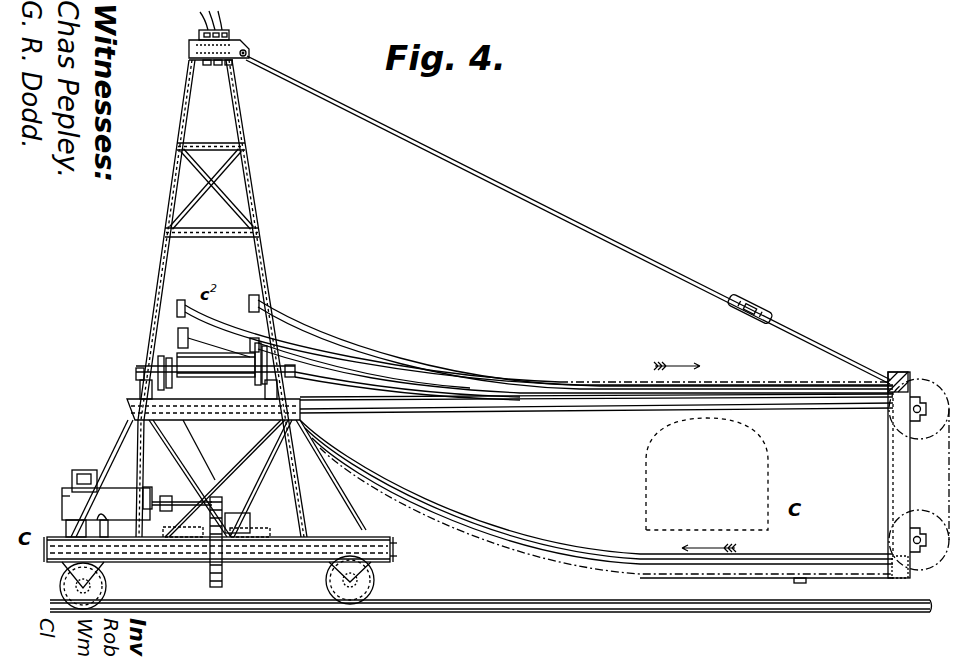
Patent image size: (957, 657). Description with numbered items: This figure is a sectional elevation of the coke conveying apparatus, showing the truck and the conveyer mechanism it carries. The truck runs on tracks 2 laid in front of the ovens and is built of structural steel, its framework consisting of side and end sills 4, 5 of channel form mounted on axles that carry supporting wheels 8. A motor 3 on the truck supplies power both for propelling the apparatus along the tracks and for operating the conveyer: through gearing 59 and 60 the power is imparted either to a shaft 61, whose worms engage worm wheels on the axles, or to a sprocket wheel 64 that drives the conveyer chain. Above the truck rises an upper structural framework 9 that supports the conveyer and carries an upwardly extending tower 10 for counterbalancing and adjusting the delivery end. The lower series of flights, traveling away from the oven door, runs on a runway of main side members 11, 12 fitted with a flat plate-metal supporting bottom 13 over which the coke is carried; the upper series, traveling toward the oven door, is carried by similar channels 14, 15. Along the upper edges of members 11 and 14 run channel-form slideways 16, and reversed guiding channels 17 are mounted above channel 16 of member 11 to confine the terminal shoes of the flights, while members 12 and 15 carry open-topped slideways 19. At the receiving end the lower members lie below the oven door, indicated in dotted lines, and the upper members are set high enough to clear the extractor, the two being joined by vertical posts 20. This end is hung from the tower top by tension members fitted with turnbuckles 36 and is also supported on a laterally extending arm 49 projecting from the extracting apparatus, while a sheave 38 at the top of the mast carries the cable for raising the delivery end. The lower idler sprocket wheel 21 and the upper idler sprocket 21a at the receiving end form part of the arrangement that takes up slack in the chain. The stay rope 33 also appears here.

The tracks 2 is at (507, 609).
The motor 3 is at (128, 493).
The side sills 4 is at (320, 538).
The end sills 5 is at (384, 551).
The supporting wheels 8 is at (58, 581).
The upper structural framework 9 is at (175, 466).
The tower 10 is at (236, 128).
The main side member of lower runway 11 is at (180, 349).
The main side member of lower runway 12 is at (297, 331).
The supporting bottom 13 is at (205, 353).
The upper runway channel 14 is at (177, 306).
The upper runway channel 15 is at (262, 304).
The slideway channel 16 is at (180, 300).
The guiding channel 17 is at (178, 330).
The slideway 19 is at (264, 292).
The vertical posts 20 is at (890, 466).
The lower idler sprocket wheel 21 is at (935, 556).
The upper idler sprocket 21a is at (912, 395).
The stay rope 33 is at (626, 246).
The turnbuckle 36 is at (757, 306).
The sheave 38 is at (213, 15).
The laterally extending arm 49 is at (800, 583).
The gearing 59 is at (225, 483).
The gearing 60 is at (222, 580).
The shaft 61 is at (170, 555).
The sprocket wheel 64 is at (268, 552).